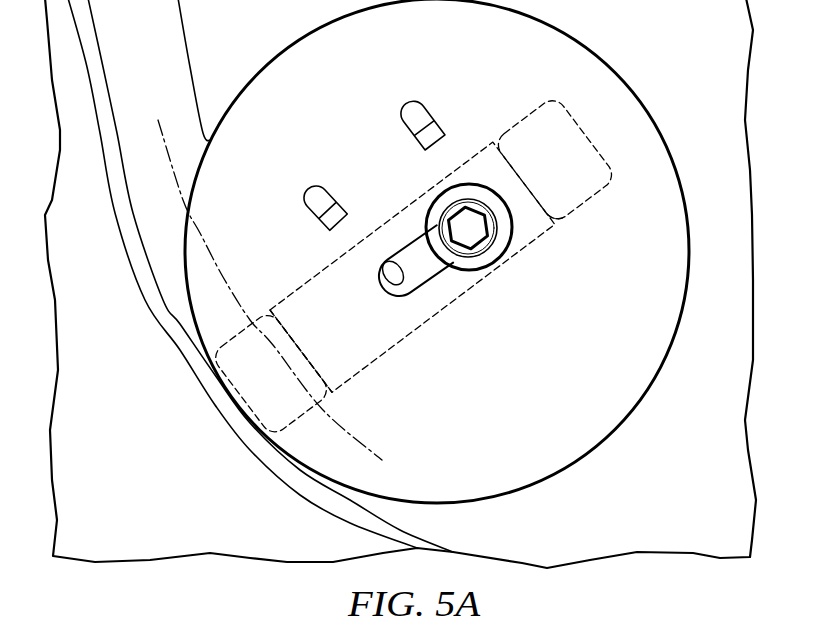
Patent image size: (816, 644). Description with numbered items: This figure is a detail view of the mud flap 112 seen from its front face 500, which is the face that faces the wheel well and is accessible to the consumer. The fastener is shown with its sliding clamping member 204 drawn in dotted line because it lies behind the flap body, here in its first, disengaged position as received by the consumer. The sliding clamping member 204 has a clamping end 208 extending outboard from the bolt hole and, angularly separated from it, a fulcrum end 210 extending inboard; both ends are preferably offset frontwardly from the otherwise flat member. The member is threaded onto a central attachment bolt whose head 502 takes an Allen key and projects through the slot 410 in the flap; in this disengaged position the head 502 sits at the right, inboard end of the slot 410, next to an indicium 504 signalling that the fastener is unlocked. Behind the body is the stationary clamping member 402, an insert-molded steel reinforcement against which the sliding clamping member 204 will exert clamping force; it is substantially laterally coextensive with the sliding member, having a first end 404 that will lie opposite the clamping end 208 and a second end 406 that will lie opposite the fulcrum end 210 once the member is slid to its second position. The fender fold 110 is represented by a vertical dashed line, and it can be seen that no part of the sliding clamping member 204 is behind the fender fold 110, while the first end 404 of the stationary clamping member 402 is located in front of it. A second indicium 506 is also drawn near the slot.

The fender fold 110 is at (207, 249).
The mud flap 112 is at (589, 530).
The sliding clamping member 204 is at (423, 318).
The clamping end 208 is at (264, 312).
The fulcrum end 210 is at (562, 104).
The stationary clamping member 402 is at (205, 340).
The first end 404 is at (224, 404).
The second end 406 is at (558, 222).
The slot 410 is at (390, 287).
The front face 500 is at (581, 412).
The head 502 is at (512, 232).
The indicium 504 is at (408, 104).
The retaining tab 506 is at (318, 192).